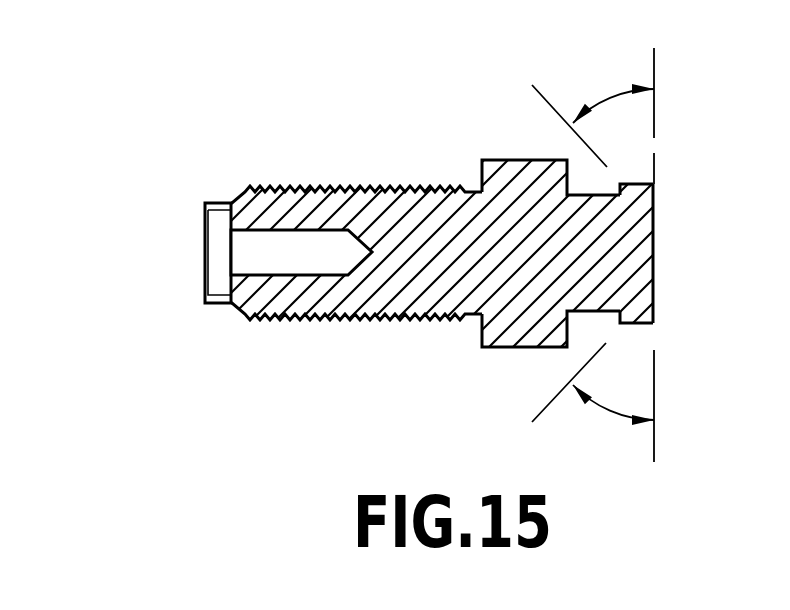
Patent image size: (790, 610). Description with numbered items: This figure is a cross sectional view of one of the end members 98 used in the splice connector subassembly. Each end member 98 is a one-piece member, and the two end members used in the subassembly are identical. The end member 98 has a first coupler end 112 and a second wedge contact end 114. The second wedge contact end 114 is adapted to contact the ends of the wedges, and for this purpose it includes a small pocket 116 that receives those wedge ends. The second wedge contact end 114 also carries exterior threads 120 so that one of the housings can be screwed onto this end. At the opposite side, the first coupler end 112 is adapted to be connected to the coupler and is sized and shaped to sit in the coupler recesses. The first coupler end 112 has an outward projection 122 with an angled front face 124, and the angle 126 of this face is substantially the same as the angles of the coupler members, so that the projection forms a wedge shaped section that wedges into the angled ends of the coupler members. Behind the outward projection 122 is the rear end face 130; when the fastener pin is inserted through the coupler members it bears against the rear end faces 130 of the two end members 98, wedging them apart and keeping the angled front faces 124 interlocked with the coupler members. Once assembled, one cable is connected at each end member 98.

The end member 98 is at (145, 142).
The first coupler end 112 is at (653, 227).
The second wedge contact end 114 is at (205, 203).
The pocket 116 is at (295, 245).
The exterior threads 120 is at (373, 190).
The outward projection 122 is at (653, 184).
The angled front face 124 is at (520, 160).
The angle 126 is at (608, 97).
The rear end face 130 is at (653, 280).